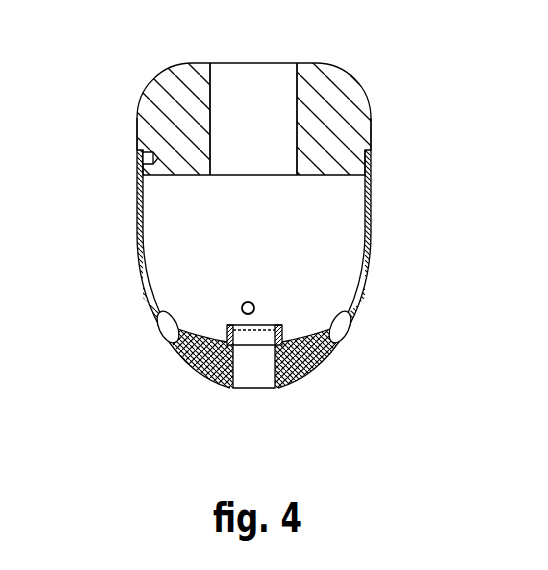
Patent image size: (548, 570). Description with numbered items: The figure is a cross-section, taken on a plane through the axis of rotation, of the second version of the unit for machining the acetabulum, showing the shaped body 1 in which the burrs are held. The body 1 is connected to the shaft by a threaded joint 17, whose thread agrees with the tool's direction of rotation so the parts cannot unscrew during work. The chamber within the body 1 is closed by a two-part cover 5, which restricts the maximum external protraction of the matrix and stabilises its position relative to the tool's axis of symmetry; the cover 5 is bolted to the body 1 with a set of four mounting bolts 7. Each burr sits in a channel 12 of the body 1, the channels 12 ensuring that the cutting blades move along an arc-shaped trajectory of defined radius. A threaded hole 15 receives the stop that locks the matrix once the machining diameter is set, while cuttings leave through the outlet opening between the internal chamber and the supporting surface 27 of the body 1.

The body 1 is at (293, 382).
The cover 5 is at (350, 73).
The mounting bolt 7 is at (143, 146).
The channel 12 is at (157, 318).
The threaded hole 15 is at (241, 312).
The threaded joint 17 is at (278, 334).
The supporting surface 27 is at (243, 388).